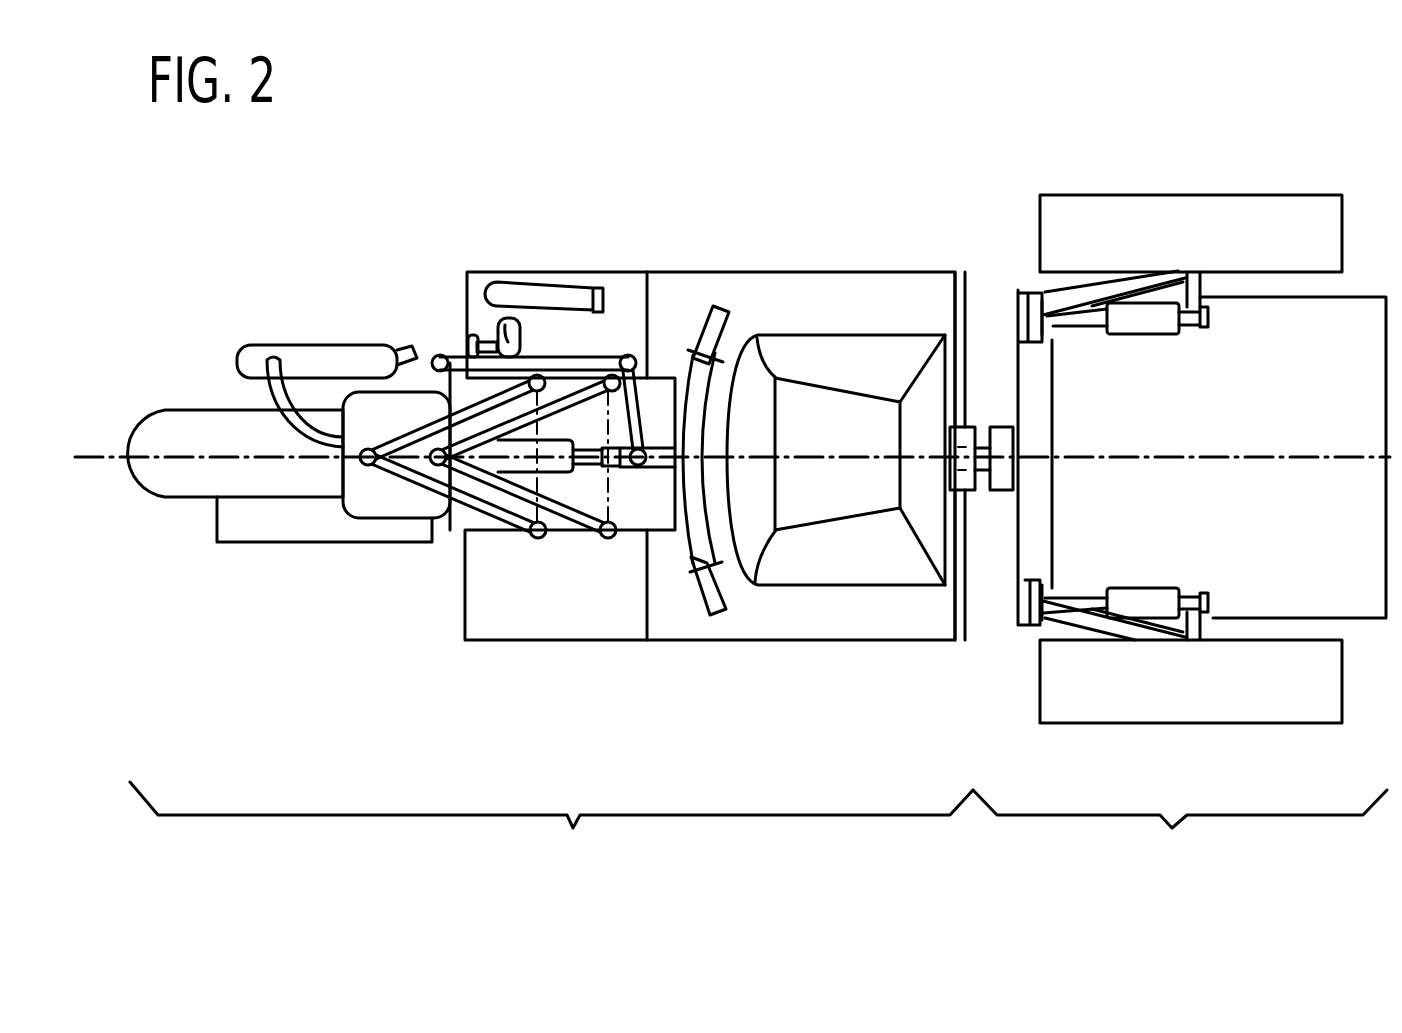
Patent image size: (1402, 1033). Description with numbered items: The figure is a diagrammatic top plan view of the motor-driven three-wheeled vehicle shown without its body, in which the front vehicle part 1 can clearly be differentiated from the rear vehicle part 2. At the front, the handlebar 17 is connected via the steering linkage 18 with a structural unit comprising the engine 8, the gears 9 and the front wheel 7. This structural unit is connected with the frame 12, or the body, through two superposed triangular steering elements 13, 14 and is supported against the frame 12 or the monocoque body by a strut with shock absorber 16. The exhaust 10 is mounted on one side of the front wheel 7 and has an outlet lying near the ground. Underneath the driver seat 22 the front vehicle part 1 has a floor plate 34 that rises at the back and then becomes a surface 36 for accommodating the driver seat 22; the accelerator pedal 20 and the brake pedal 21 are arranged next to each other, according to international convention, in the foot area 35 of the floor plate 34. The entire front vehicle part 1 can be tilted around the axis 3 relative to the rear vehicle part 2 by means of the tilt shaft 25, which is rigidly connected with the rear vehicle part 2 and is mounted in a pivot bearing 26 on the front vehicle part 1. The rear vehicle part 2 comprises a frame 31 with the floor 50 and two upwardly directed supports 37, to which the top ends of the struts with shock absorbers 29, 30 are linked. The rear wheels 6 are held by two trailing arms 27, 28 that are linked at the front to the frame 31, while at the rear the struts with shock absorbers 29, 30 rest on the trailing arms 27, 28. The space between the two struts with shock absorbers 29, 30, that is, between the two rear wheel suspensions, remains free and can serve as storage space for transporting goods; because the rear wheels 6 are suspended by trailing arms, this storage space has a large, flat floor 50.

The front vehicle part 1 is at (551, 836).
The rear vehicle part 2 is at (1180, 840).
The axis 3 is at (867, 455).
The rear wheels 6 is at (1237, 227).
The front wheel 7 is at (172, 430).
The engine 8 is at (373, 417).
The gears 9 is at (293, 520).
The exhaust 10 is at (318, 360).
The frame 12 is at (642, 530).
The triangular steering element 13 is at (580, 515).
The triangular steering element 14 is at (433, 485).
The strut with shock absorber 16 is at (510, 458).
The handlebar 17 is at (695, 385).
The steering linkage 18 is at (620, 357).
The accelerator pedal 20 is at (522, 295).
The brake pedal 21 is at (500, 325).
The driver seat 22 is at (840, 362).
The tilt shaft 25 is at (980, 440).
The pivot bearing 26 is at (965, 485).
The trailing arm 27 is at (1097, 307).
The trailing arm 28 is at (1092, 623).
The strut with shock absorber 29 is at (1145, 323).
The strut with shock absorber 30 is at (1137, 598).
The frame 31 is at (1030, 542).
The floor plate 34 is at (612, 603).
The foot area 35 is at (580, 283).
The surface 36 is at (777, 295).
The supports 37 is at (1053, 345).
The floor 50 is at (1263, 420).